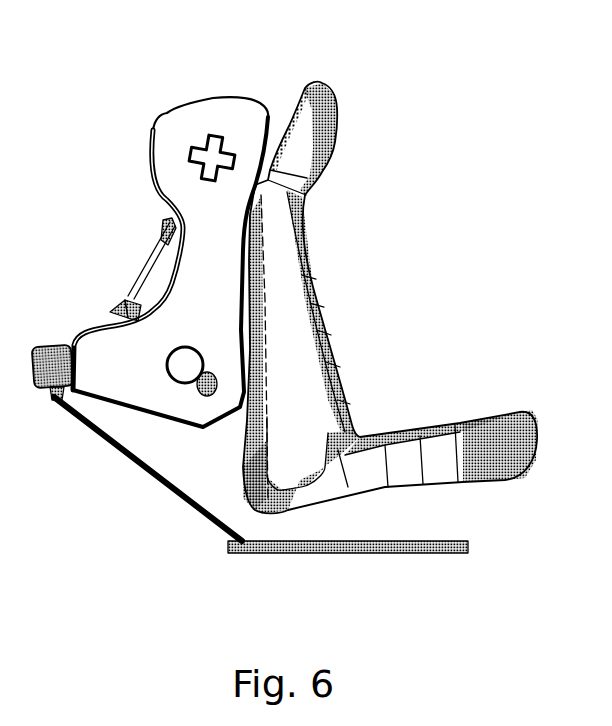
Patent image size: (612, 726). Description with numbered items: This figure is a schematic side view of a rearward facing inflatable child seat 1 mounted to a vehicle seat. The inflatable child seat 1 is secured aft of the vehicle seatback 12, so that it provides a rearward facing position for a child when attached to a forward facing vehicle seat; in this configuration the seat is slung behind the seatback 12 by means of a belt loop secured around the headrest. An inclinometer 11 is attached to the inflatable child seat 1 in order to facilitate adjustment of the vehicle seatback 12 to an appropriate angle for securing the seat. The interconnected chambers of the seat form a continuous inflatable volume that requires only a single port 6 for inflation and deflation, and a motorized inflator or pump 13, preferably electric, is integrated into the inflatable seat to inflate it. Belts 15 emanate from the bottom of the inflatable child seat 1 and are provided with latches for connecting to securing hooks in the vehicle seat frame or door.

The inflatable child seat 1 is at (249, 70).
The port 6 is at (197, 390).
The inclinometer 11 is at (193, 164).
The vehicle seatback 12 is at (270, 287).
The motorized inflator or pump 13 is at (183, 363).
The belts 15 is at (180, 490).